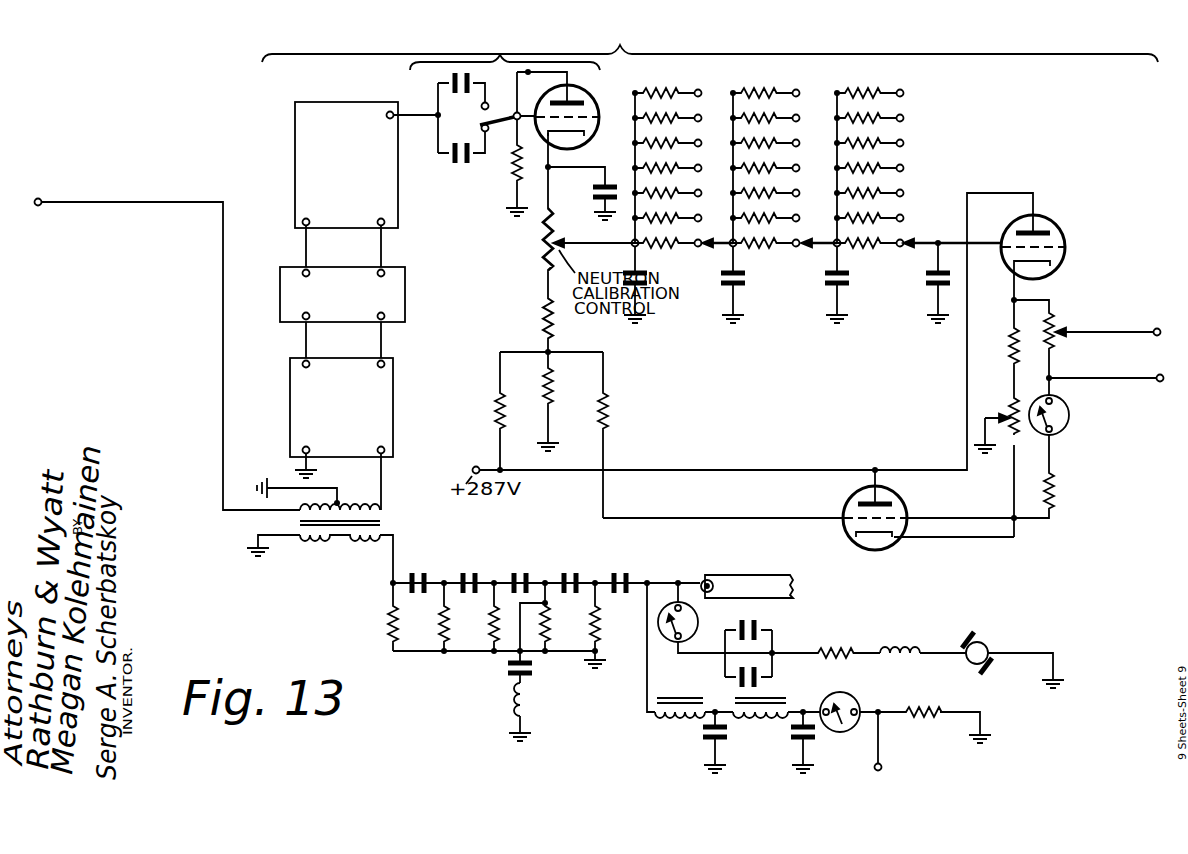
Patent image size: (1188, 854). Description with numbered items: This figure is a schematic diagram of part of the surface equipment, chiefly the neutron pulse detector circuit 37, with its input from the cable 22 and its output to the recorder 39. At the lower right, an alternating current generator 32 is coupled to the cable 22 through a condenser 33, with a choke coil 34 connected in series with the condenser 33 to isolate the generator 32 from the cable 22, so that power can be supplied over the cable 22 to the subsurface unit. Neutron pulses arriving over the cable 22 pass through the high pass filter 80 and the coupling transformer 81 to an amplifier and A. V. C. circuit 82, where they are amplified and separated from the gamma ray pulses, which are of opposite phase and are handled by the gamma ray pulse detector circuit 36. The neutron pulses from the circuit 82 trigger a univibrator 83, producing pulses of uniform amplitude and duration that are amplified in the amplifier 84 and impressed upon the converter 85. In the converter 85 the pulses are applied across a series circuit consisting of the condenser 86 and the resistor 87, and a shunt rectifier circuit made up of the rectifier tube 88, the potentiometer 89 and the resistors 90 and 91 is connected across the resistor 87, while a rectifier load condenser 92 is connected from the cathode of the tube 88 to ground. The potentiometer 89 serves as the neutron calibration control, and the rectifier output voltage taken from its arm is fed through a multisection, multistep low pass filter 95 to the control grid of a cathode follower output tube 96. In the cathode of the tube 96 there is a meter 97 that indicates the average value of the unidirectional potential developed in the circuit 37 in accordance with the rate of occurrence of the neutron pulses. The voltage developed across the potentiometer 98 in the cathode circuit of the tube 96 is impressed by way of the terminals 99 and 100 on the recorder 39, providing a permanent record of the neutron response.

The neutron pulse detector circuit 37 is at (710, 36).
The gamma ray pulse detector circuit 36 is at (42, 198).
The converter 85 is at (407, 75).
The amplifier 84 is at (295, 138).
The univibrator 83 is at (405, 297).
The amplifier and A. V. C. circuit 82 is at (396, 405).
The coupling transformer 81 is at (405, 530).
The condenser 86 is at (460, 166).
The resistor 87 is at (508, 164).
The rectifier tube 88 is at (588, 104).
The rectifier load condenser 92 is at (595, 198).
The potentiometer 89 is at (539, 250).
The resistor 90 is at (535, 320).
The resistor 91 is at (553, 398).
The multisection, multistep low pass filter 95 is at (792, 276).
The cathode follower output tube 96 is at (1058, 228).
The potentiometer 98 is at (1056, 320).
The terminal 99 is at (1156, 328).
The terminal 100 is at (1160, 375).
The meter 97 is at (1070, 414).
The high pass filter 80 is at (533, 564).
The cable 22 is at (742, 586).
The condenser 33 is at (766, 630).
The choke coil 34 is at (897, 648).
The alternating current generator 32 is at (982, 640).
The recorder 39 is at (882, 768).